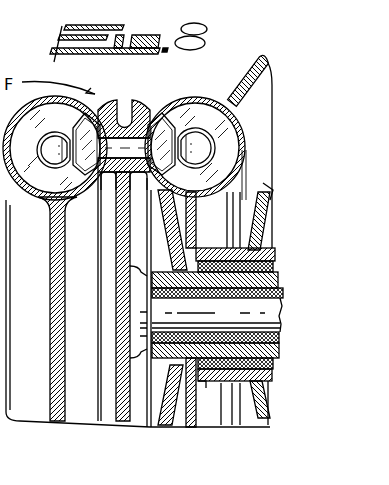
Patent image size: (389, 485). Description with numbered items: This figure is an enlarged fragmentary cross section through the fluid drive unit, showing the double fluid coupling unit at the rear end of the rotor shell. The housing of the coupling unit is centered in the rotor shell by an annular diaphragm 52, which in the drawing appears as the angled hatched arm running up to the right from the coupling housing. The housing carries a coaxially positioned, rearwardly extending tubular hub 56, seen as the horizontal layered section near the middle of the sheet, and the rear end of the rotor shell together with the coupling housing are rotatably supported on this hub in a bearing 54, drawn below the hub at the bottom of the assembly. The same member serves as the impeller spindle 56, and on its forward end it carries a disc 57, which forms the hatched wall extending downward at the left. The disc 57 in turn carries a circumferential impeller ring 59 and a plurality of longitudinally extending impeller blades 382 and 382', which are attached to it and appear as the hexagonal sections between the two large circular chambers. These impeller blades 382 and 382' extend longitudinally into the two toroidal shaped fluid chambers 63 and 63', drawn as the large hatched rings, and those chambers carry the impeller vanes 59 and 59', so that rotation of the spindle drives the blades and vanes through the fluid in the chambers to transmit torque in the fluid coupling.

The annular diaphragm 52 is at (228, 88).
The bearing 54 is at (220, 383).
The tubular hub 56 is at (217, 314).
The disc 57 is at (126, 428).
The impeller ring 59 is at (126, 107).
The impeller vane 59' is at (204, 148).
The toroidal shaped fluid chamber 63 is at (55, 258).
The toroidal shaped fluid chamber 63' is at (208, 302).
The impeller blade 382 is at (84, 177).
The impeller blade 382' is at (165, 118).